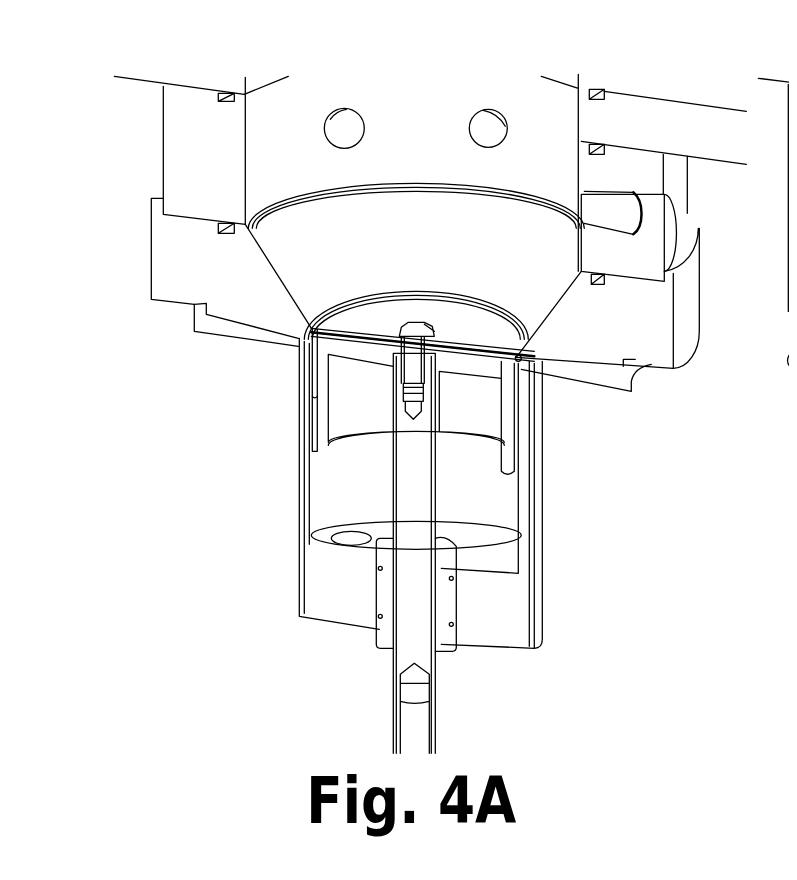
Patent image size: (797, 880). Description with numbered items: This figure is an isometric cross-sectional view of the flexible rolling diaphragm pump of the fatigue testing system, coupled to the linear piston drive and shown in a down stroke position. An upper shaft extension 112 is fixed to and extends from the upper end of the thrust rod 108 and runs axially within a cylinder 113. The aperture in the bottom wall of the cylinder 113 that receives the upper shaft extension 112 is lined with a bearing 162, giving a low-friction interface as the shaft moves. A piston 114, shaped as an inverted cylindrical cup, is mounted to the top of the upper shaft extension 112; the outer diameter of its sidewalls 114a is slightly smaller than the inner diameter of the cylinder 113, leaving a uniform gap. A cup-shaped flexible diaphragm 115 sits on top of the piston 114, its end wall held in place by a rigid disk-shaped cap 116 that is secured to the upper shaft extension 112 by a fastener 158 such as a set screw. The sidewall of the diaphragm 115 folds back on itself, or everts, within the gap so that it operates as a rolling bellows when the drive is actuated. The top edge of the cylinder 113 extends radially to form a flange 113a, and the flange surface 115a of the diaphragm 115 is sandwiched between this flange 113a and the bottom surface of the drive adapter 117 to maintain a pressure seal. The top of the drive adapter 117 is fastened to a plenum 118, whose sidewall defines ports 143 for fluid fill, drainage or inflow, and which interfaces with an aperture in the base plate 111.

The thrust rod 108 is at (428, 720).
The base plate 111 is at (703, 103).
The upper shaft extension 112 is at (392, 650).
The cylinder 113 is at (541, 488).
The flange 113a is at (597, 387).
The piston 114 is at (370, 363).
The sidewalls 114a is at (316, 423).
The diaphragm 115 is at (311, 377).
The flange surface 115a is at (520, 360).
The cap 116 is at (467, 318).
The drive adapter 117 is at (697, 330).
The plenum 118 is at (162, 150).
The sidewall port 143 is at (330, 113).
The fastener 158 is at (408, 321).
The bearing 162 is at (452, 652).